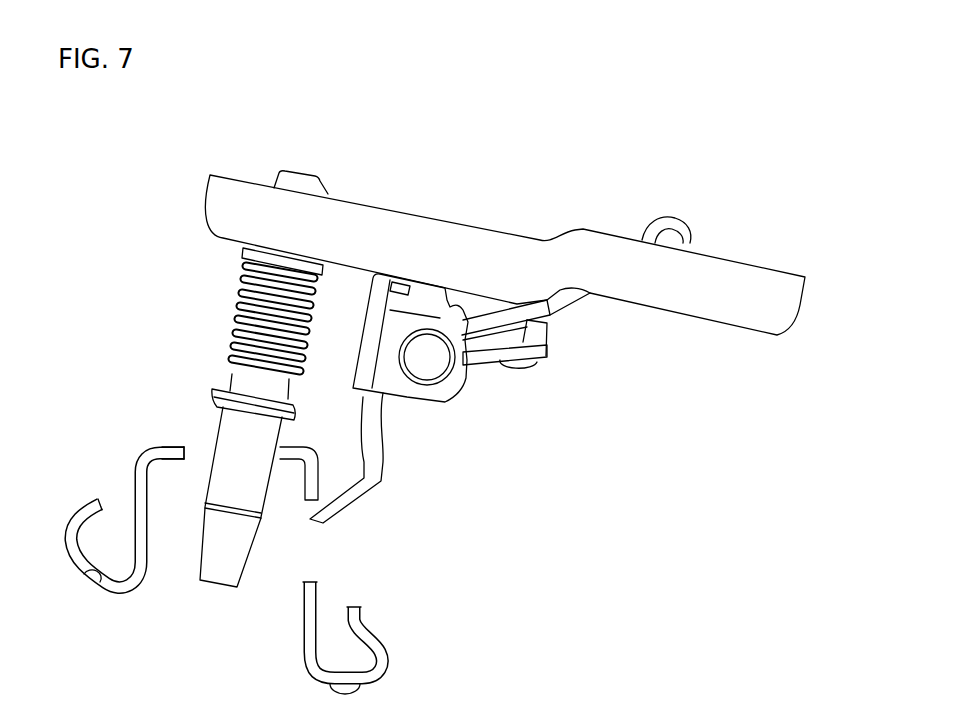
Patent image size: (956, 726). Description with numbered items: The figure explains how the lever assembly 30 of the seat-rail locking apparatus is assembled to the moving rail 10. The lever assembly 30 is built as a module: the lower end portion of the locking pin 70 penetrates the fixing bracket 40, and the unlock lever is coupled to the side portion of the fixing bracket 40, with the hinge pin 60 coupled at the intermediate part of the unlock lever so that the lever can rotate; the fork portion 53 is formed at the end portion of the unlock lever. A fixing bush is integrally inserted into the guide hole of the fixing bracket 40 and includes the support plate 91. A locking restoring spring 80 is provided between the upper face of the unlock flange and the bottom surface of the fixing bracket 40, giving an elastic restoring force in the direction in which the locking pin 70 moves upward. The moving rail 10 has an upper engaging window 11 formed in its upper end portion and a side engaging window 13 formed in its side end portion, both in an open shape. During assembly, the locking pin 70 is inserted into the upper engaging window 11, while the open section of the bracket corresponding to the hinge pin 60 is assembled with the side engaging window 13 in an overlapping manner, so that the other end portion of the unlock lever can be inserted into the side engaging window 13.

The moving rail 10 is at (142, 485).
The upper engaging window 11 is at (183, 450).
The side engaging window 13 is at (318, 580).
The lever assembly 30 is at (507, 219).
The fixing bracket 40 is at (345, 215).
The fork portion 53 is at (372, 497).
The hinge pin 60 is at (435, 370).
The locking pin 70 is at (207, 570).
The locking restoring spring 80 is at (247, 278).
The support plate 91 is at (245, 252).